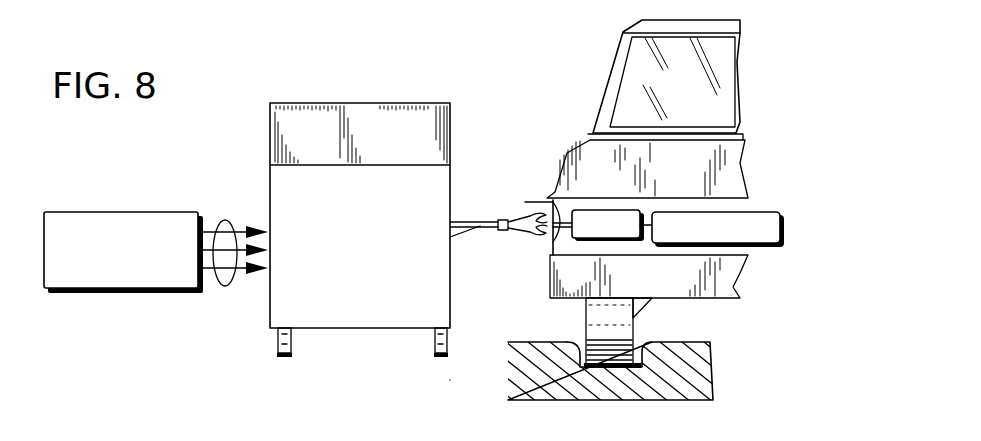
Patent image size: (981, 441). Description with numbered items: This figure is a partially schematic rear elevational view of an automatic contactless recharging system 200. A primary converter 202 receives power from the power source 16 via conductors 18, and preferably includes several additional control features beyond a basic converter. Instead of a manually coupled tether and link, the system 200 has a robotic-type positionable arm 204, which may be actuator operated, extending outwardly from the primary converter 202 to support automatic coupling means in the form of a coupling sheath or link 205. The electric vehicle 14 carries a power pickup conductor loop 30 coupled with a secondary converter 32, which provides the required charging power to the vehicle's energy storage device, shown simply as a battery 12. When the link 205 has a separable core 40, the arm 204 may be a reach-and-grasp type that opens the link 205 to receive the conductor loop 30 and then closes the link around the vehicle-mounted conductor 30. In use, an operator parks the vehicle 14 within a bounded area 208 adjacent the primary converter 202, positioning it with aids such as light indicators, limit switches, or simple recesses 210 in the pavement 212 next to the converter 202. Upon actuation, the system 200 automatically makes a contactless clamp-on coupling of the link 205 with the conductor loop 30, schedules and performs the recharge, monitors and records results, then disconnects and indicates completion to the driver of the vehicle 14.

The battery 12 is at (776, 245).
The electric vehicle 14 is at (755, 57).
The power source 16 is at (65, 220).
The conductors 18 is at (227, 283).
The power pickup conductor loop 30 is at (560, 198).
The secondary converter 32 is at (625, 239).
The core 40 is at (446, 382).
The automatic contactless recharging system 200 is at (180, 364).
The primary converter 202 is at (388, 308).
The robotic-type positionable arm 204 is at (468, 222).
The coupling sheath or link 205 is at (518, 230).
The bounded area 208 is at (687, 342).
The recesses 210 is at (580, 363).
The pavement 212 is at (697, 378).